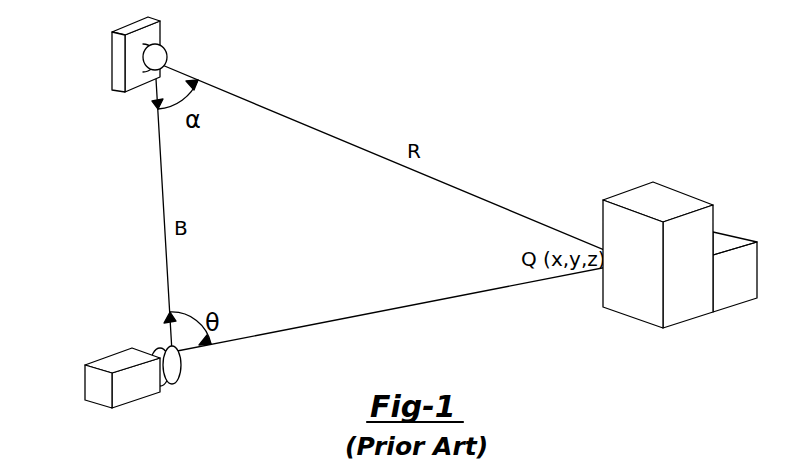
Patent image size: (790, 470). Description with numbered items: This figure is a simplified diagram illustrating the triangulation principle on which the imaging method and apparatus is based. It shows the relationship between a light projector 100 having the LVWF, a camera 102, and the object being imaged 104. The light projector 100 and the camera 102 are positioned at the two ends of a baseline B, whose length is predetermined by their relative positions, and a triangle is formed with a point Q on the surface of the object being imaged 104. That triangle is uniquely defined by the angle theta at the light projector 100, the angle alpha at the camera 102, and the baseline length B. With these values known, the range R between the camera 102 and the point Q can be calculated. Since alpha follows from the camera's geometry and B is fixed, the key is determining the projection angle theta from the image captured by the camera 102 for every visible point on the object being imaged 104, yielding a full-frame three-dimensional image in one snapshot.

The light projector 100 is at (92, 375).
The camera 102 is at (113, 40).
The object being imaged 104 is at (623, 319).